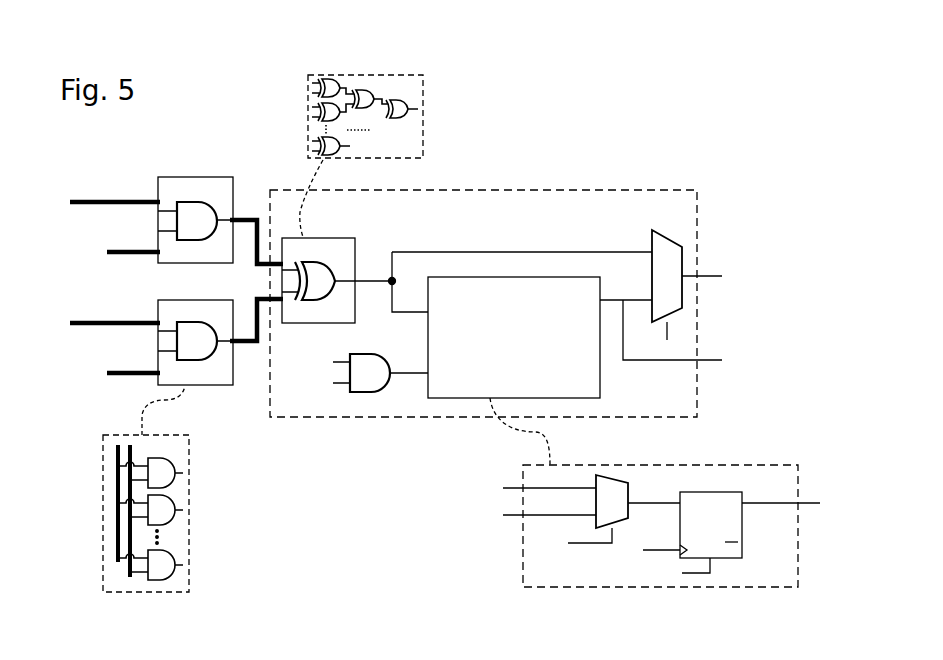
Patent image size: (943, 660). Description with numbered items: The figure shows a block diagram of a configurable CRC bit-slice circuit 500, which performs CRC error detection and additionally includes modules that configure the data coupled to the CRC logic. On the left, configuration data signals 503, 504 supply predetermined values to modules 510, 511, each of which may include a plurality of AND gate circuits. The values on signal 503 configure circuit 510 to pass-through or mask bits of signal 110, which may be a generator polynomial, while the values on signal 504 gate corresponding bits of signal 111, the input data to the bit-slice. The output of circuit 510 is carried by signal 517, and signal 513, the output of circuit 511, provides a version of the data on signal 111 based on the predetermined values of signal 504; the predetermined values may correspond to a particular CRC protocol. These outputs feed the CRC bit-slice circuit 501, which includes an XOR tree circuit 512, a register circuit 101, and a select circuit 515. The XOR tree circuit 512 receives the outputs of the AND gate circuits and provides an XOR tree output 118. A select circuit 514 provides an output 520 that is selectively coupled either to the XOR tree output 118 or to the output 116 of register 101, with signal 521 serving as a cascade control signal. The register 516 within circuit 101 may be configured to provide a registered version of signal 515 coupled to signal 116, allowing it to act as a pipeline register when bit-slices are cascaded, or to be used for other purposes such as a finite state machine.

The configurable CRC bit-slice circuit 500 is at (719, 106).
The CRC bit-slice circuit 501 is at (538, 190).
The configuration data signal 503 is at (110, 201).
The configuration data signal 504 is at (110, 323).
The generator polynomial signal 110 is at (110, 252).
The input data signal 111 is at (110, 373).
The AND gate circuit module 510 is at (171, 177).
The AND gate circuit module 511 is at (203, 386).
The XOR tree circuit 512 is at (332, 238).
The output signal of circuit 511 513 is at (243, 345).
The first AND block output bus 517 is at (242, 217).
The select circuit 514 is at (663, 232).
The select circuit 515 is at (402, 377).
The register 516 is at (720, 492).
The select circuit output 520 is at (706, 275).
The cascade control signal 521 is at (670, 331).
The register output signal 116 is at (637, 362).
The XOR tree output 118 is at (508, 252).
The register circuit 101 is at (532, 322).